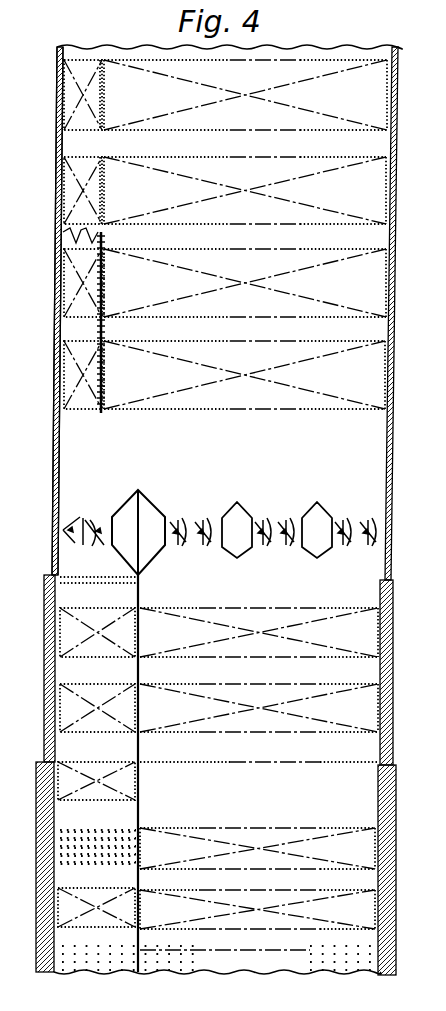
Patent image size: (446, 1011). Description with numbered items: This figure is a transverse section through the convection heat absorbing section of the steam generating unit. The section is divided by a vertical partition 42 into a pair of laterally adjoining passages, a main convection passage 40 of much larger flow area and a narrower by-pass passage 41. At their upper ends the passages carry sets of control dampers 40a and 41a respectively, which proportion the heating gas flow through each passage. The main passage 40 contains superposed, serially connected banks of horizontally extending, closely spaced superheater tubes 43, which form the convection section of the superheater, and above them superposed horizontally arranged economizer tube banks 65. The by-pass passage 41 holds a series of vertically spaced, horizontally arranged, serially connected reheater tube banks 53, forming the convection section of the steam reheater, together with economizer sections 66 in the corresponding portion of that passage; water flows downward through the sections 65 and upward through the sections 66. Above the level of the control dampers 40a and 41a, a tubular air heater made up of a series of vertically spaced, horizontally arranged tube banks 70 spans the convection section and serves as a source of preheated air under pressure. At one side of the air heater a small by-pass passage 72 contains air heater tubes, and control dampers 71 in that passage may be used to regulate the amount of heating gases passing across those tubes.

The main convection passage 40 is at (270, 818).
The control dampers 40a is at (306, 498).
The by-pass passage 41 is at (80, 868).
The control dampers 41a is at (110, 488).
The vertical partition 42 is at (140, 750).
The superheater tubes 43 is at (283, 930).
The reheater tube banks 53 is at (112, 857).
The economizer tube banks 65 is at (272, 708).
The economizer sections 66 is at (86, 662).
The air heater tube banks 70 is at (325, 338).
The control dampers 71 is at (65, 231).
The by-pass passage 72 is at (72, 327).